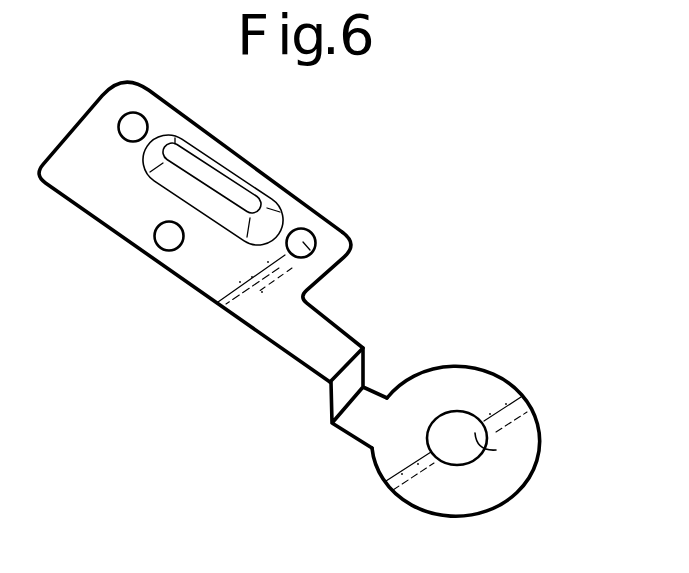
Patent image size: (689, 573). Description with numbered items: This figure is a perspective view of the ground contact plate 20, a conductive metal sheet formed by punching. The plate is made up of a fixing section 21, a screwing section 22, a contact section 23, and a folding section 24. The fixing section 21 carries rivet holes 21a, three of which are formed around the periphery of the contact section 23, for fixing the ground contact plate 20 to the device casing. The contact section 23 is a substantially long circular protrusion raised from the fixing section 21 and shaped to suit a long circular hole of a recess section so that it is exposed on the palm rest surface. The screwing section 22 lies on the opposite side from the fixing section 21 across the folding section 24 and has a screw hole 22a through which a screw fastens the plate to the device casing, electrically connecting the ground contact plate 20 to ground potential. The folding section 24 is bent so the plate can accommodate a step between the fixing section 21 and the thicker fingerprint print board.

The ground contact plate 20 is at (342, 203).
The fixing section 21 is at (108, 209).
The rivet holes 21a is at (343, 258).
The screwing section 22 is at (500, 391).
The screw hole 22a is at (496, 450).
The contact section 23 is at (220, 163).
The folding section 24 is at (364, 364).